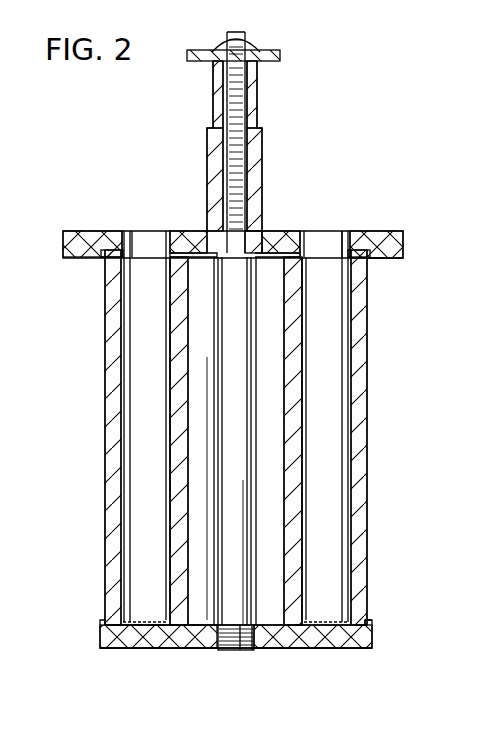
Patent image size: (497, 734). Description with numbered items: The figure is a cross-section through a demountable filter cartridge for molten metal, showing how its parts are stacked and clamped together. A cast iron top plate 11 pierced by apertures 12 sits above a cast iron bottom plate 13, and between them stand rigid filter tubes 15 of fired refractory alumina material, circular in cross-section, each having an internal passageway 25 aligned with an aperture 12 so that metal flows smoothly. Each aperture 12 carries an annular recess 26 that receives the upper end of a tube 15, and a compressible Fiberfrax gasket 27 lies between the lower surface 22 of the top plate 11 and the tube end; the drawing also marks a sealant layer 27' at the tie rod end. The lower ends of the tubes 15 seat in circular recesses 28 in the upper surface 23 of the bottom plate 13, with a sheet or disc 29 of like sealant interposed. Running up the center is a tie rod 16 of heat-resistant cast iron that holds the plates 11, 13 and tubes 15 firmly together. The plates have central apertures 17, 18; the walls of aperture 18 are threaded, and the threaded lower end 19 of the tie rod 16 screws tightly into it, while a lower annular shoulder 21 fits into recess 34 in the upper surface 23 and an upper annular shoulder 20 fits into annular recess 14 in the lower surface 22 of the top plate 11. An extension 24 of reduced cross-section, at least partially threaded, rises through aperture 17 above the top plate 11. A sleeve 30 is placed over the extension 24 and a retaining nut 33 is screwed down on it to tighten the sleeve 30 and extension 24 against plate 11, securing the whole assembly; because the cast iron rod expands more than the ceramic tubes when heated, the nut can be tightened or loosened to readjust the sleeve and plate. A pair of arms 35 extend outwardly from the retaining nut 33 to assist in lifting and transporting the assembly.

The top plate 11 is at (403, 240).
The apertures 12 is at (135, 233).
The bottom plate 13 is at (368, 640).
The annular recess 14 is at (207, 228).
The filter tubes 15 is at (110, 466).
The tie rod 16 is at (247, 404).
The central aperture 17 is at (263, 228).
The central aperture 18 is at (246, 650).
The lower end 19 is at (223, 650).
The annular shoulder 20 is at (198, 230).
The lower annular shoulder 21 is at (272, 626).
The lower surface 22 is at (388, 259).
The upper surface 23 is at (367, 623).
The extension 24 is at (246, 86).
The internal passageway 25 is at (160, 404).
The annular recess 26 is at (103, 247).
The gasket 27 is at (234, 433).
The thin tubular partition 27' is at (310, 214).
The circular recesses 28 is at (121, 640).
The sheet or disc 29 is at (142, 622).
The sleeve 30 is at (255, 147).
The retaining nut 33 is at (254, 49).
The recess 34 is at (192, 645).
The arms 35 is at (199, 52).